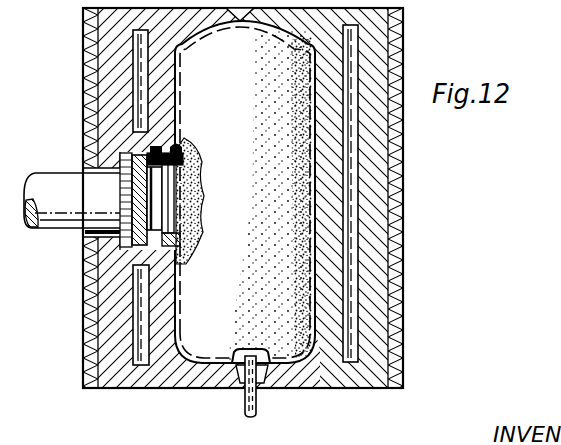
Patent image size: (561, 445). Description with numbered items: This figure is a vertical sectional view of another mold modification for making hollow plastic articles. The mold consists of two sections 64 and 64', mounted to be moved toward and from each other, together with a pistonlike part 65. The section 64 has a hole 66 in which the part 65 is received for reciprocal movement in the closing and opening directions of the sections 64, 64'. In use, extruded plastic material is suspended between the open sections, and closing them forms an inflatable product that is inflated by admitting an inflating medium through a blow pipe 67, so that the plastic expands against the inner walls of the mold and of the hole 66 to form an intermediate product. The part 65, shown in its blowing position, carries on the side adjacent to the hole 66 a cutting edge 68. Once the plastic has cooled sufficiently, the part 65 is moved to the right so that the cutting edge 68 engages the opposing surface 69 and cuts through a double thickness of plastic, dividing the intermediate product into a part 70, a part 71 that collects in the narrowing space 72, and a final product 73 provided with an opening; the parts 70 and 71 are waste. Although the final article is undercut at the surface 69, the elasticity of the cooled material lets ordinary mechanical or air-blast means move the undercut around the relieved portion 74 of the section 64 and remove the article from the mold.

The mold section 64 is at (220, 198).
The mold section 64' is at (346, 197).
The pistonlike part 65 is at (53, 186).
The hole 66 is at (182, 198).
The blow pipe 67 is at (245, 398).
The cutting edge 68 is at (128, 183).
The opposing surface 69 is at (170, 188).
The part 70 is at (80, 233).
The part 71 is at (175, 149).
The narrowing space 72 is at (182, 238).
The final product 73 is at (176, 68).
The relieved portion 74 is at (182, 160).